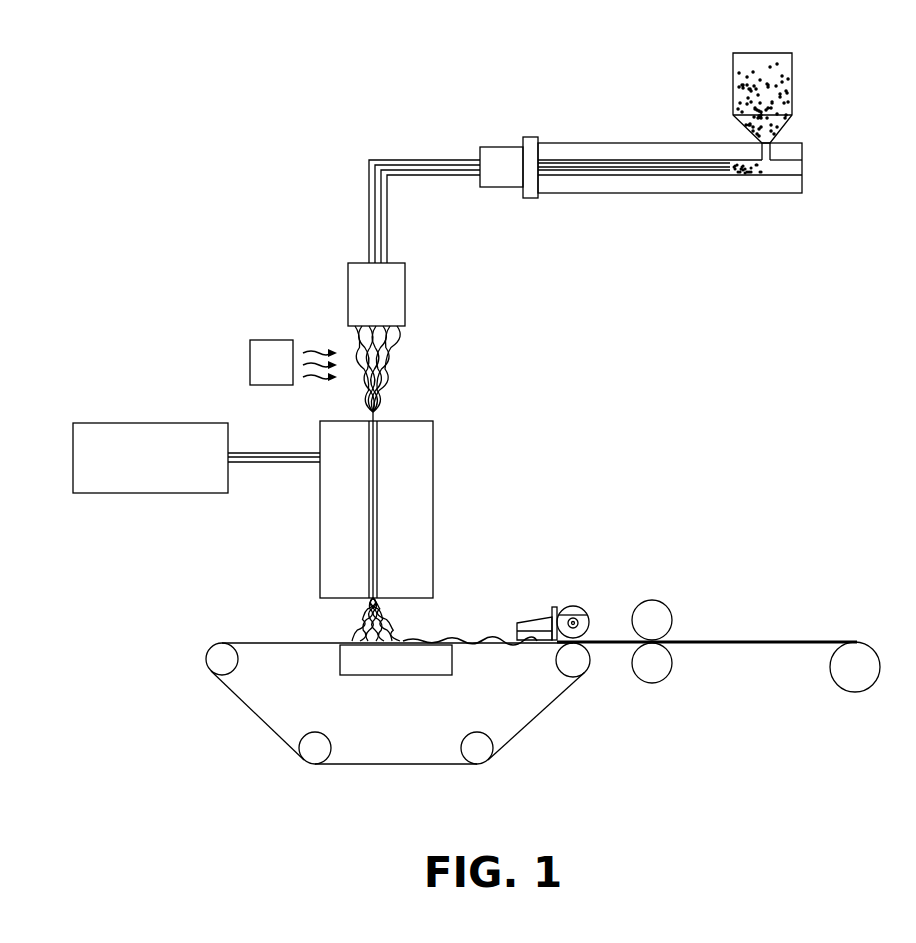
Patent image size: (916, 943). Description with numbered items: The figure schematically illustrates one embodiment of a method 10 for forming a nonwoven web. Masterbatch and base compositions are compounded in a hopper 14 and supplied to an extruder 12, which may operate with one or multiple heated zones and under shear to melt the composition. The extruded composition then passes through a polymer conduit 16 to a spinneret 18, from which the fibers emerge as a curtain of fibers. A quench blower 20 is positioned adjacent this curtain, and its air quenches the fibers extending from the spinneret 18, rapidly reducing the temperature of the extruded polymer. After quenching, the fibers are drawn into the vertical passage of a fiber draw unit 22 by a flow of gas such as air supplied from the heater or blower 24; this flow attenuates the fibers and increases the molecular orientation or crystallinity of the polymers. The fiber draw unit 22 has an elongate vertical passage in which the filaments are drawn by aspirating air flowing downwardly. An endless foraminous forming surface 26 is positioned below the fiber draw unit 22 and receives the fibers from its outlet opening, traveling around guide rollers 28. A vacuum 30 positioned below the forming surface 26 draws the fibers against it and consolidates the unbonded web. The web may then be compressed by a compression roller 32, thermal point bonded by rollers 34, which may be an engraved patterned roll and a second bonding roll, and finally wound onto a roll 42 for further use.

The method for forming a nonwoven web 10 is at (199, 122).
The extruder 12 is at (609, 136).
The hopper 14 is at (764, 53).
The polymer conduit 16 is at (399, 160).
The spinneret 18 is at (360, 307).
The quench blower 20 is at (272, 350).
The fiber draw unit 22 is at (420, 414).
The heater or blower 24 is at (134, 418).
The endless foraminous forming surface 26 is at (413, 767).
The guide rollers 28 is at (239, 659).
The vacuum 30 is at (390, 676).
The compression roller 32 is at (575, 606).
The rollers 34 is at (648, 600).
The roll 42 is at (853, 692).